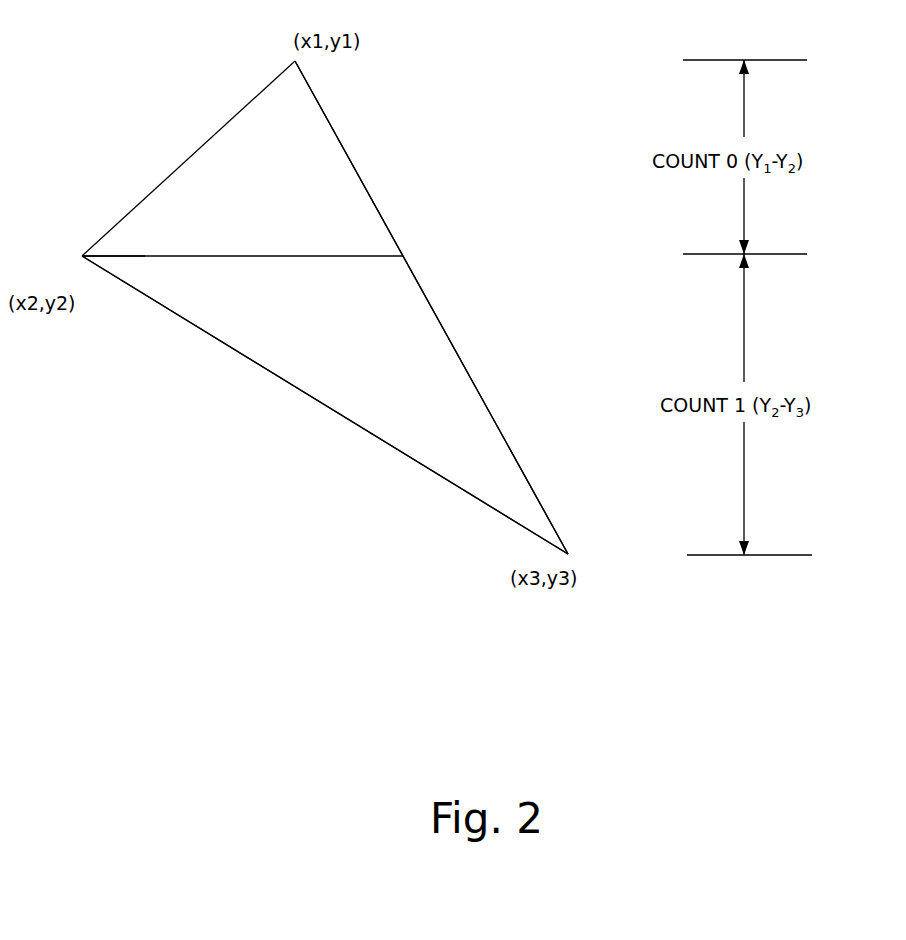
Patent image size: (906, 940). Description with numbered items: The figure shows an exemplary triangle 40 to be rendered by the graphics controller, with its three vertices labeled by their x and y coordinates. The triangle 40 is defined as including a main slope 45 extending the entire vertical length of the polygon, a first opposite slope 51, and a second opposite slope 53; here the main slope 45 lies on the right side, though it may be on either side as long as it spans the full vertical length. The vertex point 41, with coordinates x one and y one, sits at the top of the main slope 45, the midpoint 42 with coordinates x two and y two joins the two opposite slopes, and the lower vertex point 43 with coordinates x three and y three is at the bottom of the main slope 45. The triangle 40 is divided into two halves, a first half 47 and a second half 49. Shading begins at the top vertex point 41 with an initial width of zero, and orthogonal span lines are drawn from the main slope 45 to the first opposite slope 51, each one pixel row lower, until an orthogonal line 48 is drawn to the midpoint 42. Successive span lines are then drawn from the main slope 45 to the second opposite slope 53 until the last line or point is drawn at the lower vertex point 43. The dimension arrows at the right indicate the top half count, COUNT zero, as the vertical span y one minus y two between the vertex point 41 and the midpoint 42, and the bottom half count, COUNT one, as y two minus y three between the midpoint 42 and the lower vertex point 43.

The triangle 40 is at (400, 425).
The vertex point 41 is at (294, 61).
The midpoint 42 is at (82, 257).
The lower vertex point 43 is at (569, 554).
The main slope 45 is at (419, 283).
The first half 47 is at (293, 160).
The orthogonal line 48 is at (145, 256).
The second half 49 is at (483, 398).
The first opposite slope 51 is at (191, 155).
The second opposite slope 53 is at (255, 362).